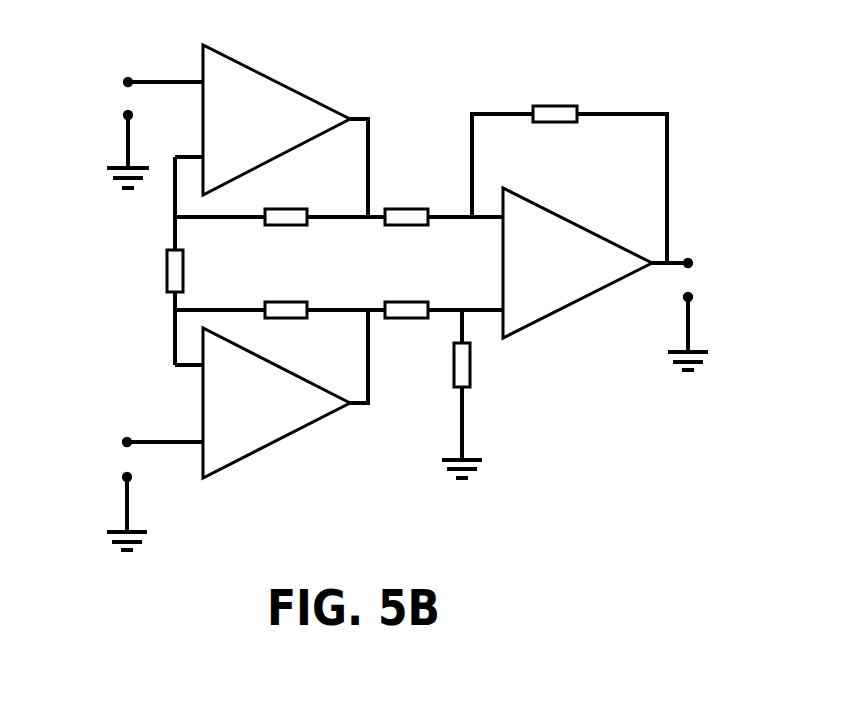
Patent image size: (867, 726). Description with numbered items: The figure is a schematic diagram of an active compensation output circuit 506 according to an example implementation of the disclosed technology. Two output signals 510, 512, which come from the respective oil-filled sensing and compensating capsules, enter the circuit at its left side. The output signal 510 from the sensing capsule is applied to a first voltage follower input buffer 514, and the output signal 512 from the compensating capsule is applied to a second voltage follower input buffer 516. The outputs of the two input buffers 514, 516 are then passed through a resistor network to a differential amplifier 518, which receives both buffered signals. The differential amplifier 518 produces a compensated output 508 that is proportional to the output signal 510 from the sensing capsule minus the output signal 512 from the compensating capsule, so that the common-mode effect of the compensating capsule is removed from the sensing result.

The active compensation output circuit 506 is at (432, 58).
The compensated output 508 is at (712, 315).
The output signal 510 is at (132, 133).
The output signal 512 is at (133, 494).
The voltage follower input buffer 514 is at (275, 132).
The voltage follower input buffer 516 is at (282, 424).
The differential amplifier 518 is at (572, 280).